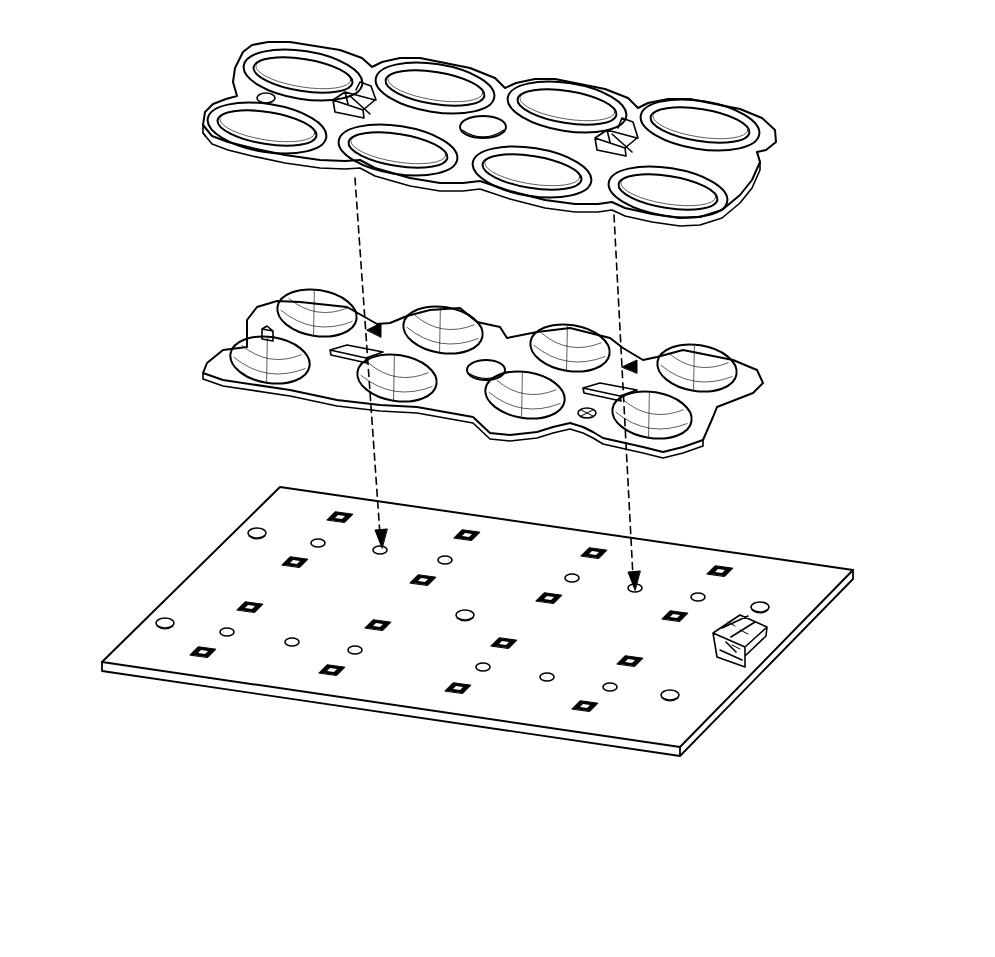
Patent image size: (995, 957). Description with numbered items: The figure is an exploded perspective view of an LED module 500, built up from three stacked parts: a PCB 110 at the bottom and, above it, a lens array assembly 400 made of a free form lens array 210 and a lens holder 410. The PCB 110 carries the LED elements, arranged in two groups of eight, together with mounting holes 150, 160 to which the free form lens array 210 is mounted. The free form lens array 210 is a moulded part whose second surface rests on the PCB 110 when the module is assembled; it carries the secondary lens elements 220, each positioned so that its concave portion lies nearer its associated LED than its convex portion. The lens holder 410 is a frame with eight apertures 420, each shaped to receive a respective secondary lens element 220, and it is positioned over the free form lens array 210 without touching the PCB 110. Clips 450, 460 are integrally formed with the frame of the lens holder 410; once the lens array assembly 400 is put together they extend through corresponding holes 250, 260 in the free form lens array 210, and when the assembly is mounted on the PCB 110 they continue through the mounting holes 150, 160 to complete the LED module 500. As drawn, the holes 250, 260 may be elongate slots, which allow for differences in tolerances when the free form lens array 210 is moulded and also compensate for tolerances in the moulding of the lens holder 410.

The PCB 110 is at (785, 597).
The mounting hole 150 is at (384, 550).
The mounting hole 160 is at (638, 588).
The free form lens array 210 is at (217, 373).
The secondary lens element 220 is at (443, 325).
The hole 250 is at (355, 352).
The hole 260 is at (603, 388).
The lens array assembly 400 is at (777, 87).
The lens holder 410 is at (248, 157).
The aperture 420 is at (440, 96).
The clip 450 is at (355, 95).
The clip 460 is at (620, 120).
The LED module 500 is at (105, 35).